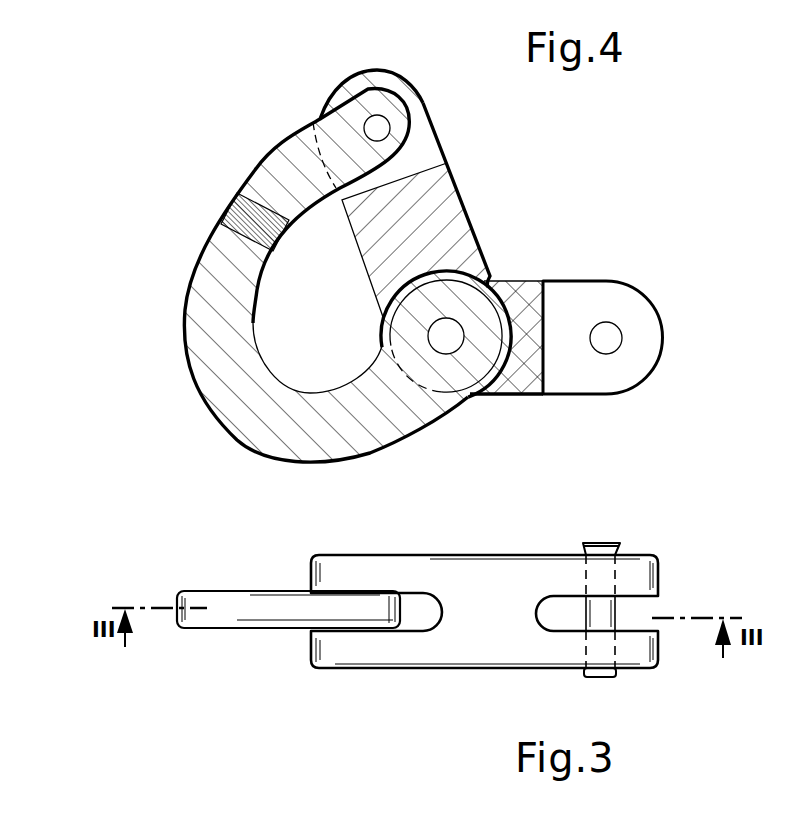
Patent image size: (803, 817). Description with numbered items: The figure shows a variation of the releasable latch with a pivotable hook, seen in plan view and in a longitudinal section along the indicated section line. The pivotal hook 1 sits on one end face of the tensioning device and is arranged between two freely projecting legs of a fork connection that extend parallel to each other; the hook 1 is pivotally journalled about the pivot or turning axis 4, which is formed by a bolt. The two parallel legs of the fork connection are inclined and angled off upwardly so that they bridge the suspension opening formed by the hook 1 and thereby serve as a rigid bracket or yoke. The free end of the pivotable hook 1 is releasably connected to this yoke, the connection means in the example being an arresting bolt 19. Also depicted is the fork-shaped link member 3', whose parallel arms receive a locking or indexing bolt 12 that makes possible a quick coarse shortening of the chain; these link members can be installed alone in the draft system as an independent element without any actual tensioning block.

In FIG. 4, the pivotal hook 1 is at (244, 415).
In FIG. 3, the pivotal hook 1 is at (257, 612).
In FIG. 4, the arresting bolt 19 is at (374, 121).
In FIG. 4, the pivot or turning axis 4 is at (451, 332).
In FIG. 4, the fork-shaped link member 3' is at (566, 295).
In FIG. 3, the fork-shaped link member 3' is at (669, 616).
In FIG. 4, the locking or indexing bolt 12 is at (608, 328).
In FIG. 3, the locking or indexing bolt 12 is at (608, 545).